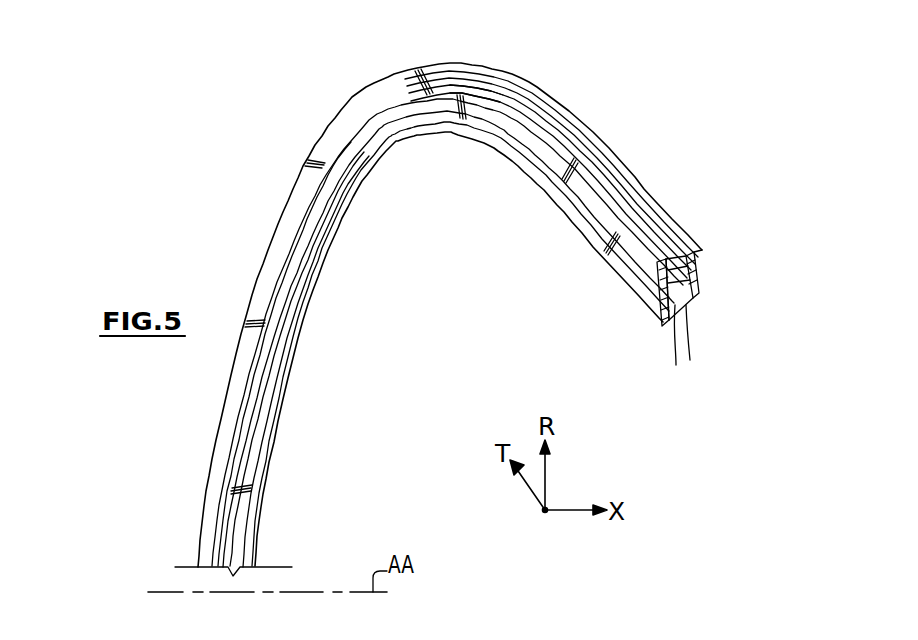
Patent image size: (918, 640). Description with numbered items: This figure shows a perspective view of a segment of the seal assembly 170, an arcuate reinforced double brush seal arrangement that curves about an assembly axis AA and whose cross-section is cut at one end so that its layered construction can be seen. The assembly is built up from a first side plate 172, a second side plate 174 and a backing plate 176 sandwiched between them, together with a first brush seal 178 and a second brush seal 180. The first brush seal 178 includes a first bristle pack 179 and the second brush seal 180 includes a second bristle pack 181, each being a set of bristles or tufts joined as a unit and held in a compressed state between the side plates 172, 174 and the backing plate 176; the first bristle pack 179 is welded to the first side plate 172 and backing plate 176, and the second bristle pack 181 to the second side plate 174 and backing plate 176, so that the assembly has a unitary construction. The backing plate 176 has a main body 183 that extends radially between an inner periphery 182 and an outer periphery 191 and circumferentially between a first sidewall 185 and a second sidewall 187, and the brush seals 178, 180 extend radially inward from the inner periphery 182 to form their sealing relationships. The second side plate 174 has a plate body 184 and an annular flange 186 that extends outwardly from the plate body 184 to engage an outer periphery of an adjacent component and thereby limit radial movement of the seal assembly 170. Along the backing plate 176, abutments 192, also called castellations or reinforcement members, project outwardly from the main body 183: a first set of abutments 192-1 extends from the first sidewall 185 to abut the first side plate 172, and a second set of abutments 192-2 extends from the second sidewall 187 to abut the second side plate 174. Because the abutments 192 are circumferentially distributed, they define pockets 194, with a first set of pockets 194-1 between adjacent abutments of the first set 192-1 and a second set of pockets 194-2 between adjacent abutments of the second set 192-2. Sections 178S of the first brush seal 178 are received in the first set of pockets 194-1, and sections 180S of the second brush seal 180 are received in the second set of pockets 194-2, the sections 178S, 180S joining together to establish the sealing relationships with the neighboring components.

The seal assembly 170 is at (204, 124).
The first side plate 172 is at (313, 153).
The second side plate 174 is at (700, 278).
The backing plate 176 is at (660, 212).
The first brush seal 178 is at (636, 284).
The sections of the first brush seal 178S is at (628, 270).
The first bristle pack 179 is at (655, 303).
The second brush seal 180 is at (696, 300).
The second bristle pack 181 is at (692, 275).
The sections of the second brush seal 180S is at (656, 178).
The inner periphery 182 is at (676, 365).
The main body 183 is at (690, 360).
The plate body 184 is at (704, 262).
The first sidewall 185 is at (590, 212).
The annular flange 186 is at (706, 256).
The second sidewall 187 is at (643, 186).
The outer periphery 191 is at (692, 228).
The abutments 192 is at (562, 172).
The first set of abutments 192-1 is at (475, 97).
The second set of abutments 192-2 is at (640, 185).
The pockets 194 is at (513, 125).
The first set of pockets 194-1 is at (476, 90).
The second set of pockets 194-2 is at (548, 112).